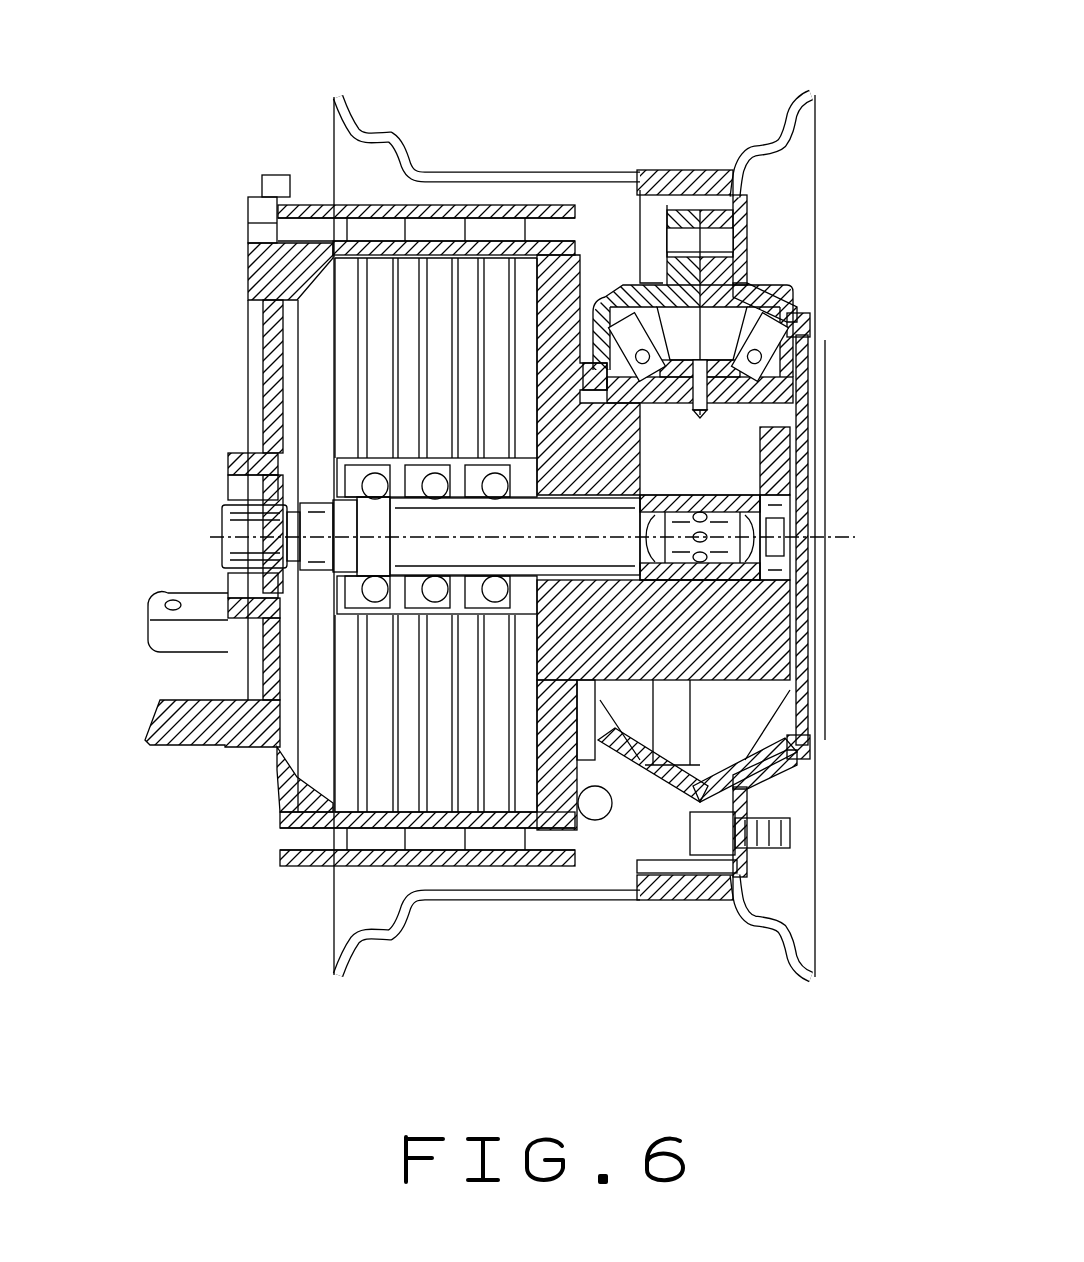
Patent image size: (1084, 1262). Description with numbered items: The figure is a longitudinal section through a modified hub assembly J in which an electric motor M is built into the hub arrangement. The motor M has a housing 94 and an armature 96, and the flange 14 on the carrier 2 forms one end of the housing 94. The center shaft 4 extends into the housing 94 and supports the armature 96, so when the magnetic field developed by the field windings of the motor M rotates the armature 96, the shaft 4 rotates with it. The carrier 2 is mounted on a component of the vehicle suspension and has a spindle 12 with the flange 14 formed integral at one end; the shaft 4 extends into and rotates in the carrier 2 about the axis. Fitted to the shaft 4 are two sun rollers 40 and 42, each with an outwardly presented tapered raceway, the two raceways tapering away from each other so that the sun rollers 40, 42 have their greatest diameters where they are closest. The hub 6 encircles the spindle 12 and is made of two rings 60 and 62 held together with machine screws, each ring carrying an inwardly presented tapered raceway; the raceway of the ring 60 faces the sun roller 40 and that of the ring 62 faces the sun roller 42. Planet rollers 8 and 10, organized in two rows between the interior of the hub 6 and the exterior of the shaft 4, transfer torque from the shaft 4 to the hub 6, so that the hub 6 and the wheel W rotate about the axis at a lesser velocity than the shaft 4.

The wheel W is at (362, 100).
The modified hub assembly J is at (205, 211).
The electric motor M is at (305, 870).
The carrier 2 is at (768, 634).
The center shaft 4 is at (214, 521).
The hub 6 is at (770, 283).
The planet rollers 8 is at (624, 306).
The planet rollers 10 is at (810, 338).
The spindle 12 is at (775, 705).
The flange 14 is at (545, 745).
The sun roller 40 is at (790, 593).
The sun roller 42 is at (780, 515).
The ring 60 is at (635, 785).
The ring 62 is at (772, 788).
The housing 94 is at (262, 342).
The armature 96 is at (430, 485).